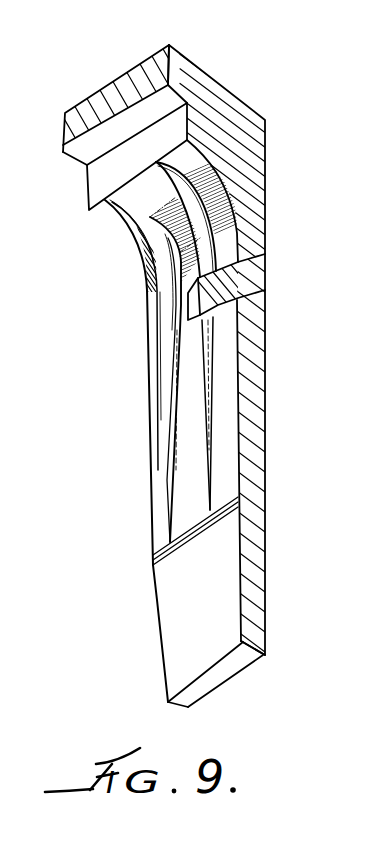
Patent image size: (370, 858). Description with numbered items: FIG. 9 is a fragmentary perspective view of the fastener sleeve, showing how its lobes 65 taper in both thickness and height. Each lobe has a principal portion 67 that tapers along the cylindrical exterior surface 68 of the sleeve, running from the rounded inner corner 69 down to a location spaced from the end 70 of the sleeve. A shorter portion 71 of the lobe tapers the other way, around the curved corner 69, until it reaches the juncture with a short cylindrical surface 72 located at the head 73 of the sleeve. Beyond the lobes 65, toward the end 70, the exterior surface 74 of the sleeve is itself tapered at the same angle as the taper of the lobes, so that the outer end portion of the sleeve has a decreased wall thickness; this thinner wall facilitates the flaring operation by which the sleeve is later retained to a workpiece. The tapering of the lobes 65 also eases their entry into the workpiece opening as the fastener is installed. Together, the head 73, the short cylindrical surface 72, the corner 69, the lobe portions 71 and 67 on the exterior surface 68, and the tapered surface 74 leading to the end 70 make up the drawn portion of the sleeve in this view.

The head 73 is at (62, 135).
The short cylindrical surface 72 is at (96, 185).
The rounded inner corner 69 is at (117, 222).
The shorter portion 71 is at (136, 262).
The principal portion 67 is at (158, 357).
The lobes 65 is at (158, 407).
The cylindrical exterior surface 68 is at (157, 465).
The exterior surface 74 is at (172, 635).
The end 70 is at (213, 674).